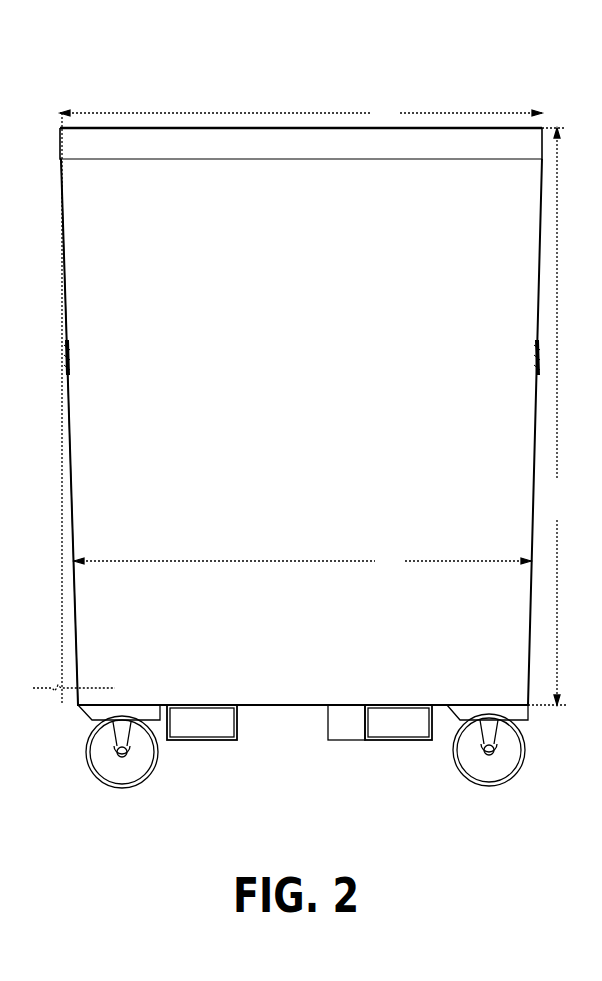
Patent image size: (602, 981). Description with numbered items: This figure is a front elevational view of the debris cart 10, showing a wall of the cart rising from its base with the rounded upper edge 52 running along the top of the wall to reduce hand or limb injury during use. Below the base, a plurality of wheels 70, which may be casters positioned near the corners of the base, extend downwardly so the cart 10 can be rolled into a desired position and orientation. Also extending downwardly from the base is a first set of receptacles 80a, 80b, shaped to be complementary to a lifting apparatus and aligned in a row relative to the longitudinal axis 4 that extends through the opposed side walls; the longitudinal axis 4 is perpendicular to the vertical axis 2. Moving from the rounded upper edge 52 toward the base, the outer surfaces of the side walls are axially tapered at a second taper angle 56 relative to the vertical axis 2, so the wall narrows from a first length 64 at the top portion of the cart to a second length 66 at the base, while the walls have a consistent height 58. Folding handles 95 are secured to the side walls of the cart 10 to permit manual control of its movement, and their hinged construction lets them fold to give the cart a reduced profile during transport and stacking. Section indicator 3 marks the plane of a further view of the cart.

The cart 10 is at (128, 81).
The vertical axis 2 is at (63, 607).
The section line 3- 3 is at (315, 773).
The longitudinal axis 4 is at (580, 402).
The rounded upper edge 52 is at (258, 128).
The second taper angle 56 is at (73, 692).
The height 58 is at (550, 416).
The first length 64 is at (301, 113).
The second length 66 is at (302, 561).
The wheels 70 is at (128, 786).
The first set of receptacles 80a is at (188, 740).
The first set of receptacles 80b is at (400, 740).
The folding handles 95 is at (65, 370).